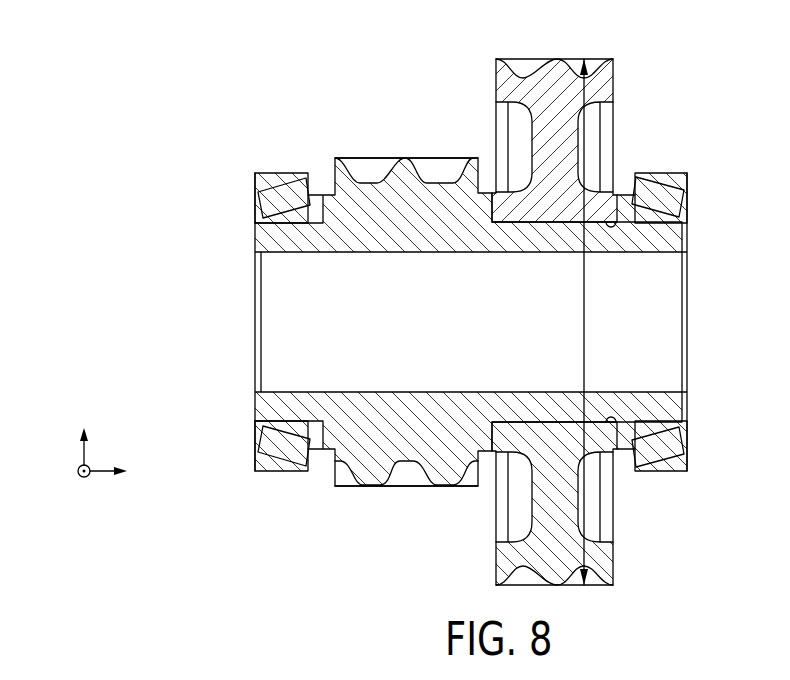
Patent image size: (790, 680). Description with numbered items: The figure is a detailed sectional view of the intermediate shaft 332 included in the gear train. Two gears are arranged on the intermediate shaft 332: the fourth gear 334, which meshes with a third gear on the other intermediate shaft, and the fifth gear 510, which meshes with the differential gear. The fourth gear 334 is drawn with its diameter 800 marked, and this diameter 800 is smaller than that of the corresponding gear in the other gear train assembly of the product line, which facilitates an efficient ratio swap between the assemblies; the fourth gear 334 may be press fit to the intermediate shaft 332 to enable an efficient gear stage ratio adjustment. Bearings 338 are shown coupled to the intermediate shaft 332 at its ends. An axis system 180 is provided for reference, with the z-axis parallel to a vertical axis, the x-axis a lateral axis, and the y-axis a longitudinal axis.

The intermediate shaft 332 is at (200, 226).
The bearings 338 is at (266, 152).
The fifth gear 510 is at (402, 140).
The fourth gear 334 is at (562, 28).
The diameter 800 is at (583, 123).
The axis system 180 is at (130, 443).